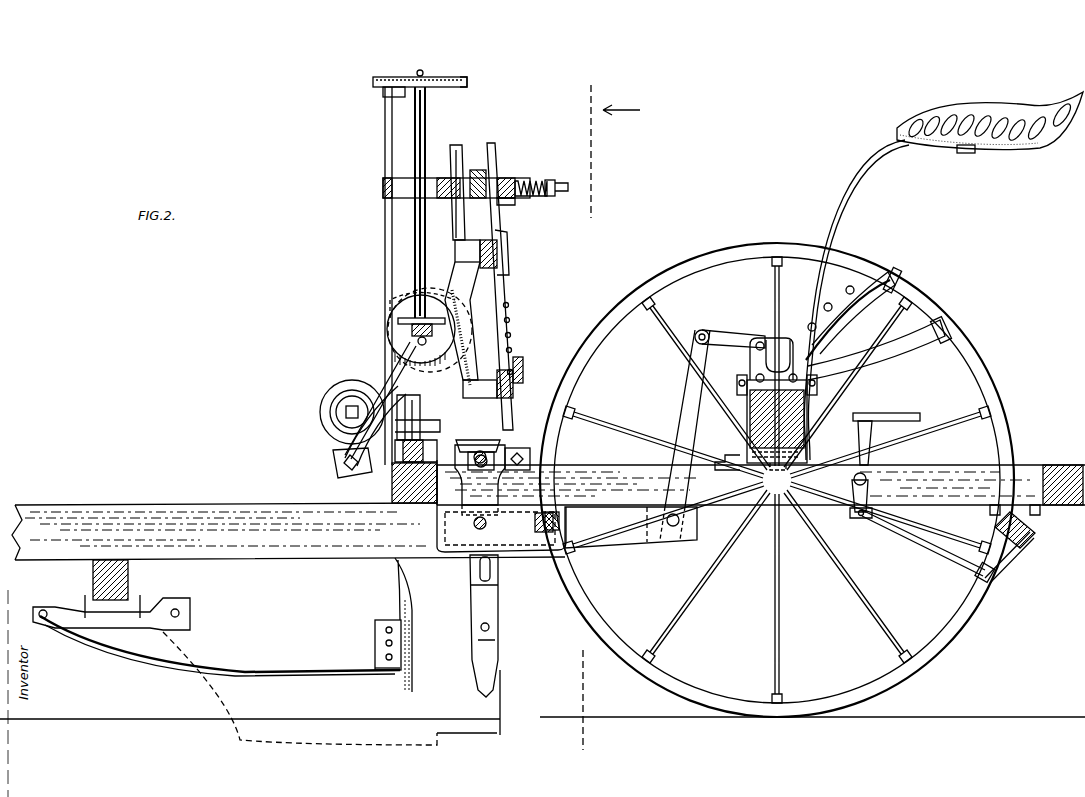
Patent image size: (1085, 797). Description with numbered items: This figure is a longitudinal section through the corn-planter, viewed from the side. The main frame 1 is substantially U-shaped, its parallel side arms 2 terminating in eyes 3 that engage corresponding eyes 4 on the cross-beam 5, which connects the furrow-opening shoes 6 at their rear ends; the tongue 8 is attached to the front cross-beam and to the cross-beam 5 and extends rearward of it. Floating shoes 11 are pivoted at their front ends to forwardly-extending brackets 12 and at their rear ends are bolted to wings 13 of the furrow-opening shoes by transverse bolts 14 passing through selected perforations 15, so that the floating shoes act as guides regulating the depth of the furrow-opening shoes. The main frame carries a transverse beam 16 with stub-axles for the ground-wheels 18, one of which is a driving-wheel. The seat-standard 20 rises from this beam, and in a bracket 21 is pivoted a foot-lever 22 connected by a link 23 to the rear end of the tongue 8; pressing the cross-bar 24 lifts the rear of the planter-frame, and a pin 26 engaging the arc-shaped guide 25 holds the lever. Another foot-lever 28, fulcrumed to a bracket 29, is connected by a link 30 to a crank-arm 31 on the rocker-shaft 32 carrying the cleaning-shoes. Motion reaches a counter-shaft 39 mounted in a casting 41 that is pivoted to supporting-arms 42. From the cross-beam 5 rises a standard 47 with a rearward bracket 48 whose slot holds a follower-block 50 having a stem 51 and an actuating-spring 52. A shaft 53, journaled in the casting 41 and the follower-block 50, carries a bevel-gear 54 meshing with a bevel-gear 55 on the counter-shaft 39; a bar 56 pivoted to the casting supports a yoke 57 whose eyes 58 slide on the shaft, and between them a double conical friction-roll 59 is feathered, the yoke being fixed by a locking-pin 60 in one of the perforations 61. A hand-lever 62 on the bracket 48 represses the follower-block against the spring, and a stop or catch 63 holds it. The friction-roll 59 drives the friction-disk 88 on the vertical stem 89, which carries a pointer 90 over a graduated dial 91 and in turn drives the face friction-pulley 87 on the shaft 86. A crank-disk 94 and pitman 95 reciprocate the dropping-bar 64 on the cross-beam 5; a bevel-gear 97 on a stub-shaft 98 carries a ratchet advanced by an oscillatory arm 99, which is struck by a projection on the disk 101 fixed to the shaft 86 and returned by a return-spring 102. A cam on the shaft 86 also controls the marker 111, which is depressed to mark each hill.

The main frame 1 is at (761, 475).
The side arms 2 is at (740, 484).
The eyes 3 is at (610, 417).
The eyes 4 is at (93, 575).
The cross-beam 5 is at (392, 483).
The furrow-opening shoes 6 is at (402, 625).
The tongue 8 is at (354, 522).
The floating shoes 11 is at (220, 646).
The brackets 12 is at (115, 612).
The wings 13 is at (380, 620).
The transverse bolts 14 is at (402, 657).
The perforations 15 is at (386, 643).
The transverse beam 16 is at (735, 458).
The ground-wheels 18 is at (1000, 440).
The seat-standard 20 is at (858, 178).
The bracket 21 is at (777, 404).
The foot-lever 22 is at (898, 340).
The link 23 is at (680, 408).
The cross-bar 24 is at (846, 290).
The arc-shaped guide 25 is at (844, 297).
The pin 26 is at (775, 338).
The foot-lever 28 is at (898, 413).
The bracket 29 is at (852, 495).
The link 30 is at (918, 540).
The crank-arm 31 is at (1010, 558).
The rocker-shaft 32 is at (1034, 533).
The counter-shaft 39 is at (480, 480).
The casting 41 is at (520, 448).
The supporting-arms 42 is at (500, 530).
The standard 47 is at (385, 260).
The bracket 48 is at (400, 178).
The follower-block 50 is at (508, 205).
The stem 51 is at (565, 183).
The actuating-spring 52 is at (548, 197).
The shaft 53 is at (456, 145).
The bevel-gear 54 is at (497, 440).
The bevel-gear 55 is at (477, 435).
The bar 56 is at (512, 293).
The yoke 57 is at (486, 240).
The eyes 58 is at (455, 250).
The double conical friction-roll 59 is at (462, 323).
The locking-pin 60 is at (524, 367).
The perforations 61 is at (520, 340).
The hand-lever 62 is at (476, 170).
The stop or catch 63 is at (512, 178).
The dropping-bar 64 is at (425, 440).
The shaft 86 is at (429, 330).
The face friction-pulley 87 is at (433, 341).
The friction-disk 88 is at (410, 326).
The vertical stem 89 is at (426, 112).
The pointer 90 is at (440, 76).
The graduated dial 91 is at (467, 83).
The crank-disk 94 is at (440, 420).
The pitman 95 is at (420, 412).
The bevel-gear 97 is at (335, 388).
The stub-shaft 98 is at (356, 390).
The oscillatory arm 99 is at (405, 388).
The disk 101 is at (405, 300).
The return-spring 102 is at (335, 448).
The marker 111 is at (496, 604).